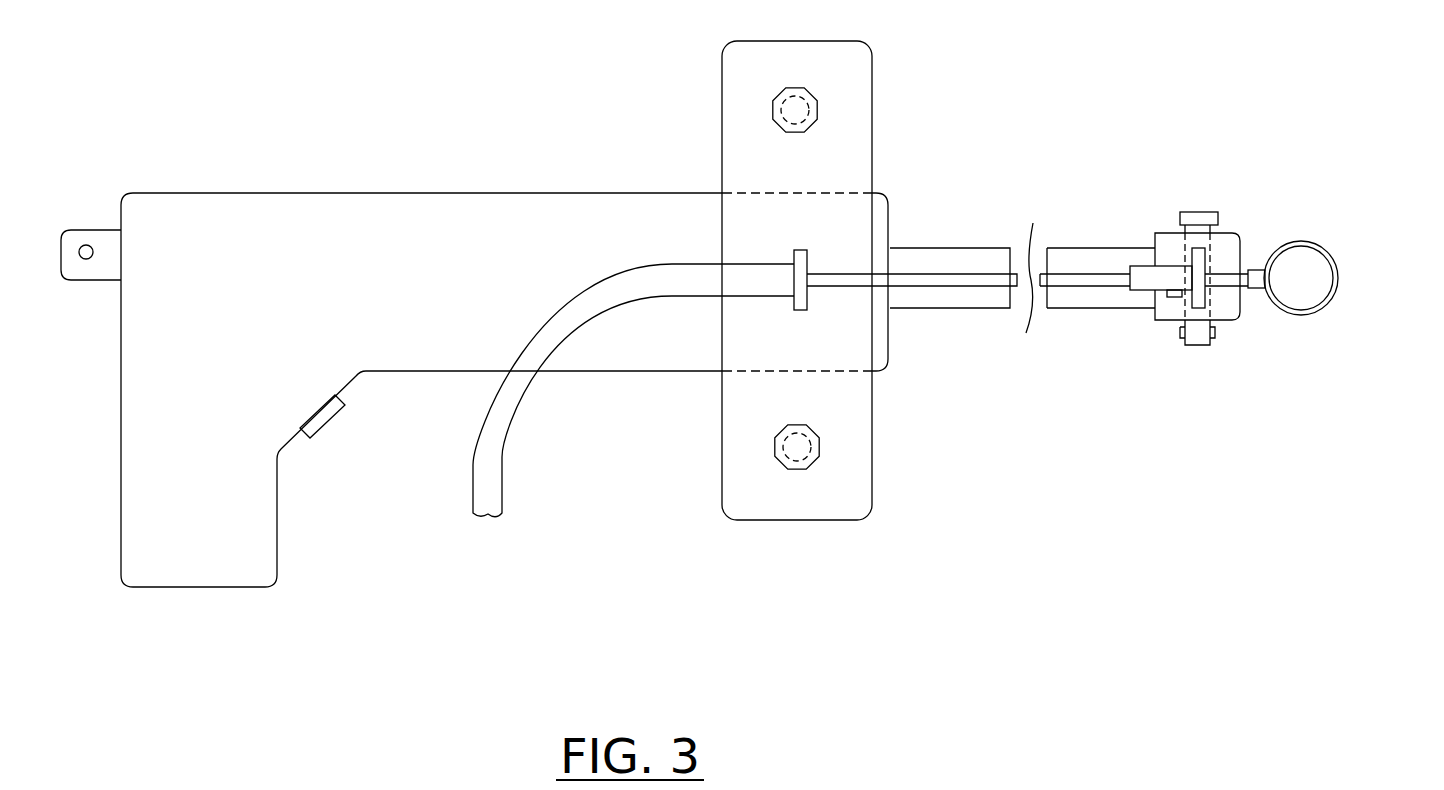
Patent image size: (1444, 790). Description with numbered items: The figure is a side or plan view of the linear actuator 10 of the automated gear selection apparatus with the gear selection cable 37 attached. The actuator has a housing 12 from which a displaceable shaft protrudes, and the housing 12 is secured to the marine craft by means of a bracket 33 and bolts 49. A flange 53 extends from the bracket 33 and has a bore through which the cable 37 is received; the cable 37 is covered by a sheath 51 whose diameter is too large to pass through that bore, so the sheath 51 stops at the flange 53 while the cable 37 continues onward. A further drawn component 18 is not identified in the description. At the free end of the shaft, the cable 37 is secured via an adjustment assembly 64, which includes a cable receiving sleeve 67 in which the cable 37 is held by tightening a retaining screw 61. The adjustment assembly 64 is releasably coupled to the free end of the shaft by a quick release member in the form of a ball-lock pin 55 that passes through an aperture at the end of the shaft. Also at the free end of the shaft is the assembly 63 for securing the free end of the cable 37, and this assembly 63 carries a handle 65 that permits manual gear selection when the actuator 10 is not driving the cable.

The linear actuator 10 is at (661, 475).
The housing 12 is at (277, 240).
The support bar 18 is at (1063, 297).
The bracket 33 is at (852, 140).
The gear selection cable 37 is at (958, 282).
The bolts 49 is at (783, 120).
The sheath 51 is at (490, 497).
The flange 53 is at (806, 260).
The ball-lock pin 55 is at (1202, 218).
The retaining screw 61 is at (1173, 297).
The assembly for securing the free end of the gear selection cable 63 is at (1235, 290).
The adjustment assembly 64 is at (1179, 173).
The handle 65 is at (1322, 308).
The cable receiving sleeve 67 is at (1155, 273).